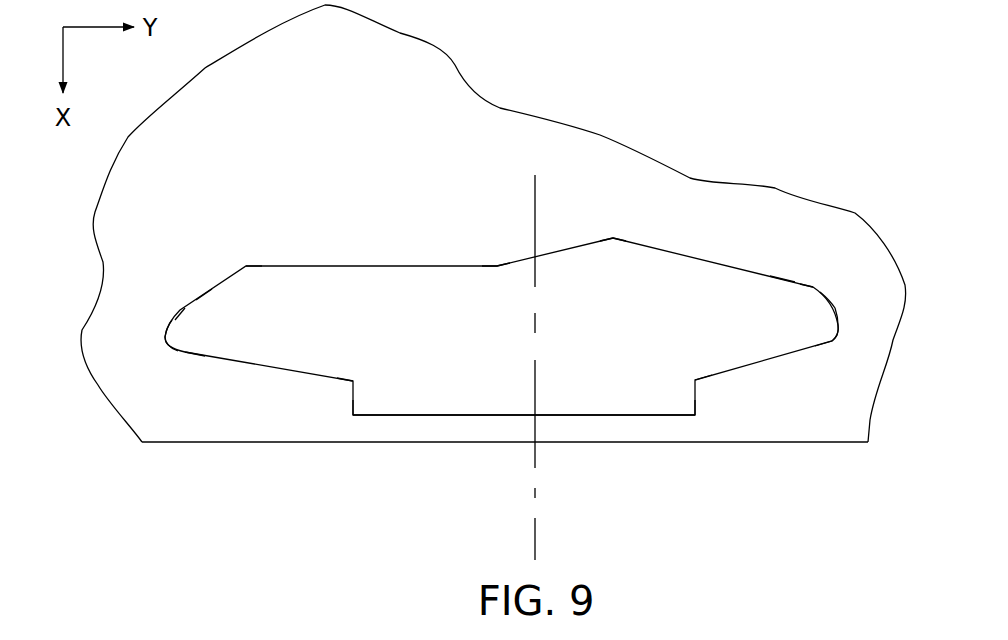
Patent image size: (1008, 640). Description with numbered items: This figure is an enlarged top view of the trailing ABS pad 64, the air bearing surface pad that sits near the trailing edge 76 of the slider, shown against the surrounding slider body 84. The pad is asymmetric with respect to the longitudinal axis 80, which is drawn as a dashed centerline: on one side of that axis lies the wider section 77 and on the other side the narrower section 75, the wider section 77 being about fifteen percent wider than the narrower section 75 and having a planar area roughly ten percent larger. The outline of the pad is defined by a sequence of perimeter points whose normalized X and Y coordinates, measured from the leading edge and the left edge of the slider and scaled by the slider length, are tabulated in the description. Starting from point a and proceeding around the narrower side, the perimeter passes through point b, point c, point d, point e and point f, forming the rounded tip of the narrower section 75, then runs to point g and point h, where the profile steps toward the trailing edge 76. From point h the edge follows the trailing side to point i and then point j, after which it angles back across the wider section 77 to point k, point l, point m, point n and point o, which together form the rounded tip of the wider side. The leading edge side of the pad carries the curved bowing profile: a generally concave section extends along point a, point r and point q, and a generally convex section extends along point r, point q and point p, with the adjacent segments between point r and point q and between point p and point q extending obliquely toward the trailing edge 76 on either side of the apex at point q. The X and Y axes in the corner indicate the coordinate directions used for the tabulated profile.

The trailing ABS pad 64 is at (370, 221).
The disk body surrounding the slot 84 is at (139, 204).
The trailing edge 76 is at (215, 447).
The narrower section 75 is at (404, 339).
The wider section 77 is at (601, 339).
The longitudinal axis 80 is at (535, 531).
The Point a is at (246, 262).
The Point b is at (205, 287).
The Point c is at (173, 311).
The Point d is at (160, 336).
The Point e is at (166, 350).
The Point f is at (189, 356).
The Point g is at (349, 384).
The Point h is at (350, 419).
The Point i is at (699, 419).
The Point j is at (701, 383).
The Point k is at (821, 346).
The Point l is at (840, 338).
The Point m is at (840, 316).
The Point n is at (833, 298).
The Point o is at (816, 285).
The Point p is at (782, 270).
The Point q is at (613, 234).
The Point r is at (495, 262).